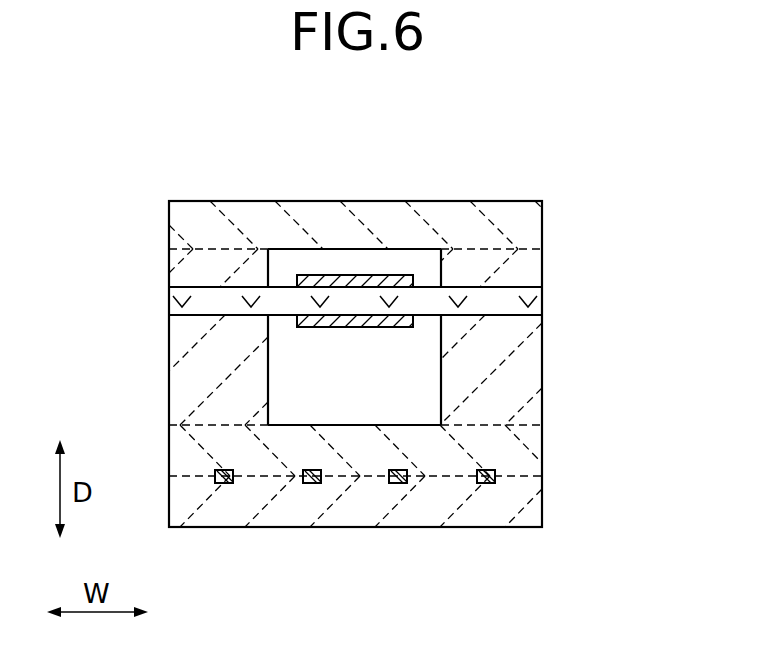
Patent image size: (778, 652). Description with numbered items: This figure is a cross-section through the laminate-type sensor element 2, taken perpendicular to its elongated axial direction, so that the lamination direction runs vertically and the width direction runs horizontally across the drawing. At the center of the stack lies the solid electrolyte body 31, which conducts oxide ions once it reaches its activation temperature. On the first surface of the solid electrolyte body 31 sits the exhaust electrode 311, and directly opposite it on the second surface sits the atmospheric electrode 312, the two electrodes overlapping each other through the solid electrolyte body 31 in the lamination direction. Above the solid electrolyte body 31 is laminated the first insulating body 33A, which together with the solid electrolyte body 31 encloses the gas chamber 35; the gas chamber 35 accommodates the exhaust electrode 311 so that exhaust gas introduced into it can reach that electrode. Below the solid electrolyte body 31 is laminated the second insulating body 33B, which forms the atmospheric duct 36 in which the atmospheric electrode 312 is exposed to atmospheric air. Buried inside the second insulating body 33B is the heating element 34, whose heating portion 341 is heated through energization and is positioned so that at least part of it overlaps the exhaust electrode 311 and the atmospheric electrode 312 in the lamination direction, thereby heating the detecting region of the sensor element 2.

The sensor element 2 is at (583, 203).
The solid electrolyte body 31 is at (475, 305).
The exhaust electrode 311 is at (385, 277).
The atmospheric electrode 312 is at (355, 327).
The first insulating body 33A is at (190, 218).
The second insulating body 33B is at (525, 375).
The heating element 34 is at (418, 483).
The heating portion 341 is at (488, 483).
The gas chamber 35 is at (288, 262).
The atmospheric duct 36 is at (327, 357).